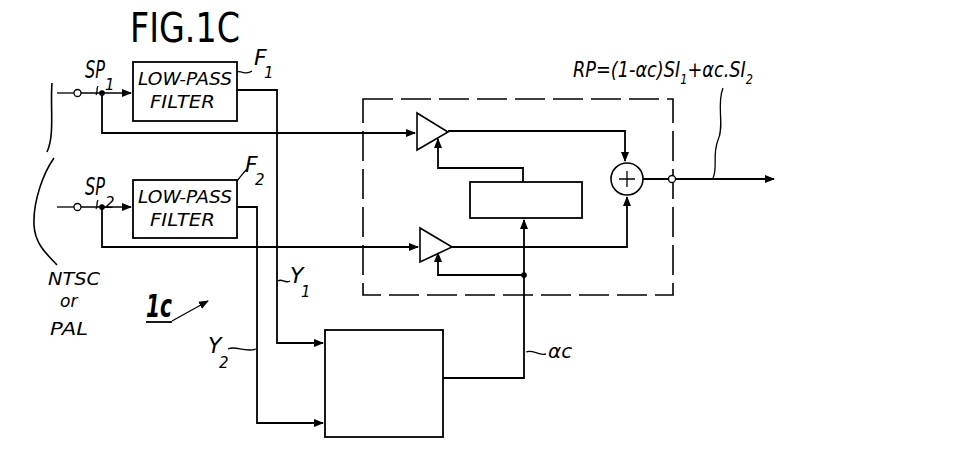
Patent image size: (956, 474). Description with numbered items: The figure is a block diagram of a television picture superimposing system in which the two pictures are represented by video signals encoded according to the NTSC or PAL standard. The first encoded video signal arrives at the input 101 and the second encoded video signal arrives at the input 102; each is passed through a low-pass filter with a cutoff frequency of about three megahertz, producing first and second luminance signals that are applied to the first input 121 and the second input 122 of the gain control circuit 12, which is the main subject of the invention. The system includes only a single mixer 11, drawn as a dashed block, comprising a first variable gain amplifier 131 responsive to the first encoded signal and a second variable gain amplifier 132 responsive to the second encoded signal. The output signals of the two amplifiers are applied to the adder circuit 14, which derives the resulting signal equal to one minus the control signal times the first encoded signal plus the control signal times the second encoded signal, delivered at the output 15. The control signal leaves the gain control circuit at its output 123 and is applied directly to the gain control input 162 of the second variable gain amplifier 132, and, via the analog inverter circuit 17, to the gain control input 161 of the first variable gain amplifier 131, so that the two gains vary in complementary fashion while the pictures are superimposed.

The first input 101 is at (77, 97).
The second input 102 is at (77, 211).
The mixer 11 is at (673, 270).
The gain control circuit 12 is at (443, 336).
The first variable gain amplifier 131 is at (417, 144).
The second variable gain amplifier 132 is at (420, 236).
The adder circuit 14 is at (637, 169).
The output 15 is at (675, 183).
The gain control input of first amplifier 161 is at (446, 140).
The gain control input of second amplifier 162 is at (447, 257).
The analog inverter circuit 17 is at (550, 182).
The first input of gain control circuit 121 is at (317, 346).
The second input of gain control circuit 122 is at (320, 421).
The output of gain control circuit 123 is at (447, 381).